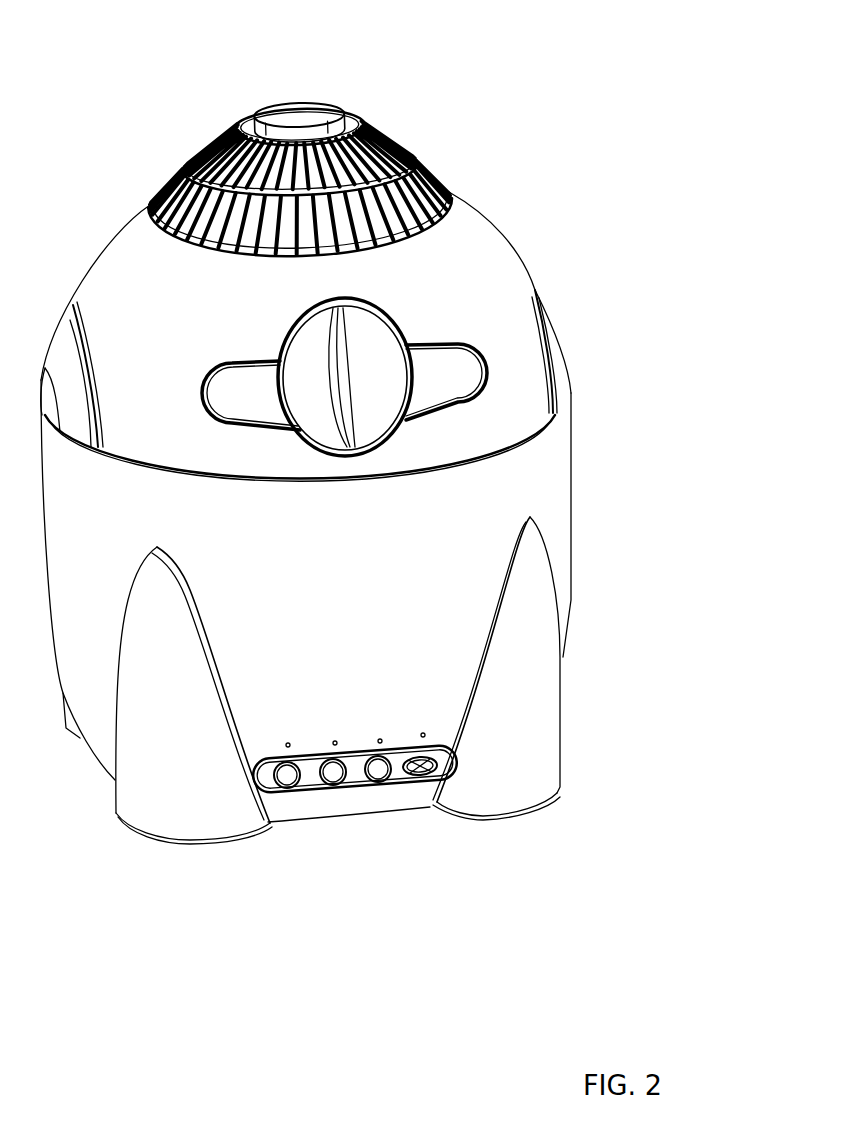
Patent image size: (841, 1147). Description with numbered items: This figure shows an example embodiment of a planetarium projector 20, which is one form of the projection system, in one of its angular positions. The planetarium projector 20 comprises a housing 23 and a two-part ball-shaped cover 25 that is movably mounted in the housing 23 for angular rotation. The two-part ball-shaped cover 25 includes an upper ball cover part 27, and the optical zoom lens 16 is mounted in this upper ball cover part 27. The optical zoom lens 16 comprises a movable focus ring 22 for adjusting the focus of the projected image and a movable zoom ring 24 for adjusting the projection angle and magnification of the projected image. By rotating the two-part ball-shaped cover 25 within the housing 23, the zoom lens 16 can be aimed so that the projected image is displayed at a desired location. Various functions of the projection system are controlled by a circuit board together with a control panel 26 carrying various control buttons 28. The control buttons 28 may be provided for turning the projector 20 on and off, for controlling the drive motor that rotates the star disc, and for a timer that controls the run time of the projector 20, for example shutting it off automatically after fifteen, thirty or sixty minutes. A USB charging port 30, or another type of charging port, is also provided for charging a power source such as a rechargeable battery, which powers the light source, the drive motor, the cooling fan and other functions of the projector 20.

The optical zoom lens 16 is at (290, 113).
The planetarium projector 20 is at (628, 124).
The movable focus ring 22 is at (432, 187).
The housing 23 is at (548, 488).
The movable zoom ring 24 is at (392, 138).
The two-part ball-shaped cover 25 is at (604, 288).
The control panel 26 is at (350, 902).
The upper ball cover part 27 is at (513, 278).
The control buttons 28 is at (378, 780).
The USB charging port 30 is at (415, 780).